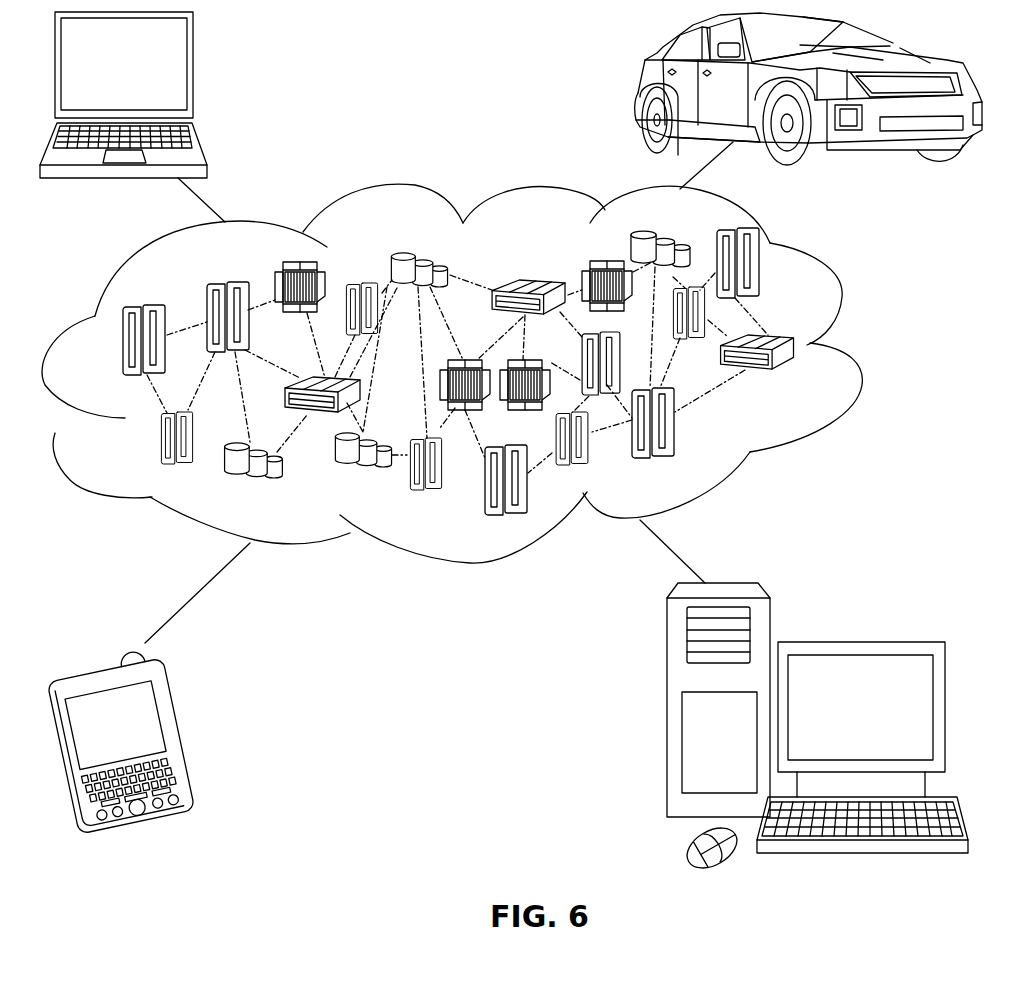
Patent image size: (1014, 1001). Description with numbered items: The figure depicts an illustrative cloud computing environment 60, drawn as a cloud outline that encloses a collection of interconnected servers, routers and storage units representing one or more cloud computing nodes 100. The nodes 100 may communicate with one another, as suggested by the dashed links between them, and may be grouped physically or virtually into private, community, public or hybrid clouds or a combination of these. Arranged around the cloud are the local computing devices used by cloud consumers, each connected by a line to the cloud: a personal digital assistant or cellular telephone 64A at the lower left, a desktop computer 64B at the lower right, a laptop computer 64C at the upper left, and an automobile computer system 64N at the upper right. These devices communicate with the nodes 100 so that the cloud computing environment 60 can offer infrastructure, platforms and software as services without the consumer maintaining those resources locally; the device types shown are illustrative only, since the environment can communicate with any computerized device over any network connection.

The cloud computing environment 60 is at (860, 348).
The cloud computing nodes 100 is at (800, 381).
The personal digital assistant (PDA) or cellular telephone 64A is at (182, 738).
The desktop computer 64B is at (857, 642).
The laptop computer 64C is at (195, 73).
The automobile computer system 64N is at (633, 90).